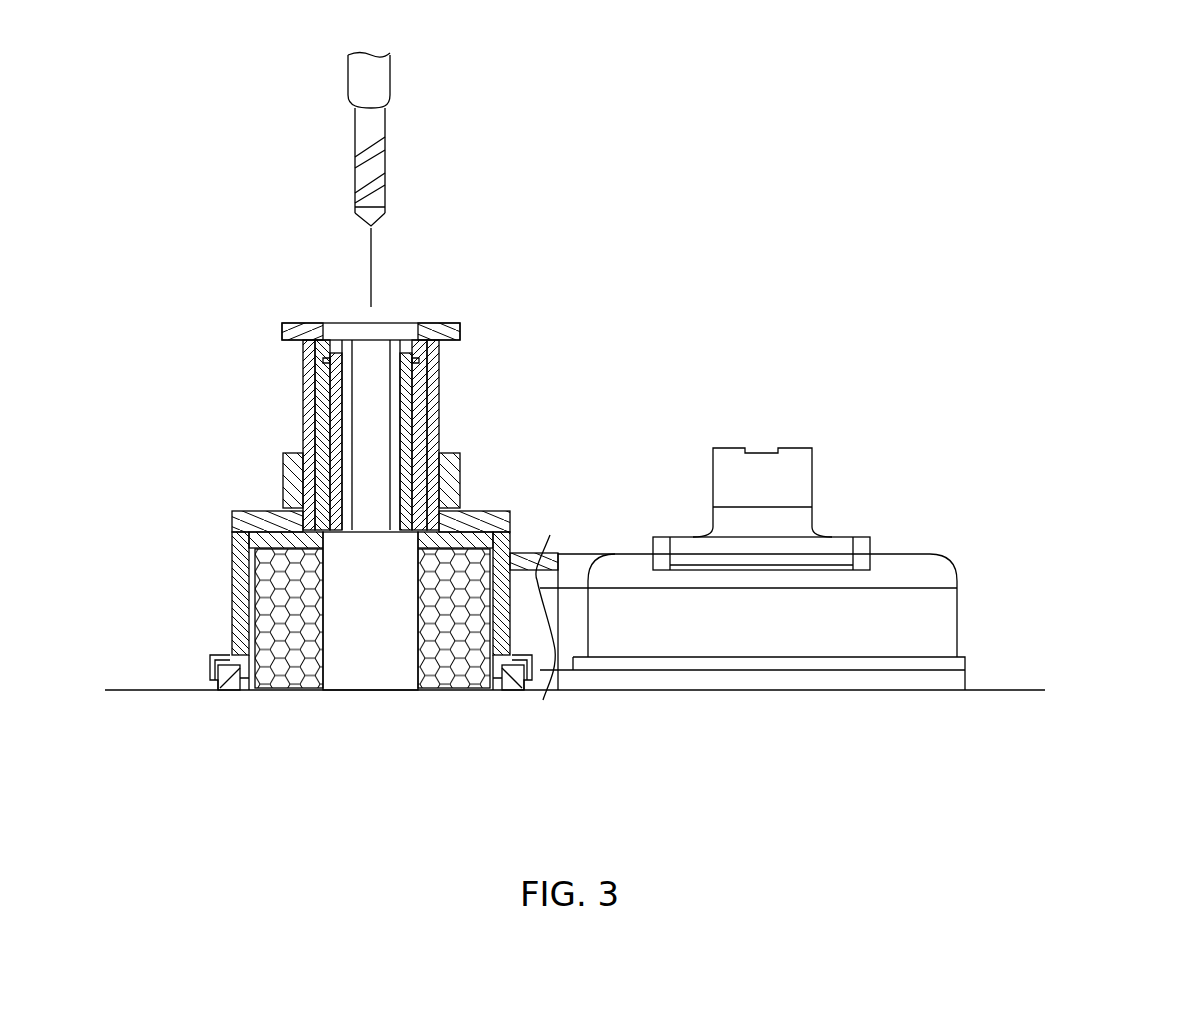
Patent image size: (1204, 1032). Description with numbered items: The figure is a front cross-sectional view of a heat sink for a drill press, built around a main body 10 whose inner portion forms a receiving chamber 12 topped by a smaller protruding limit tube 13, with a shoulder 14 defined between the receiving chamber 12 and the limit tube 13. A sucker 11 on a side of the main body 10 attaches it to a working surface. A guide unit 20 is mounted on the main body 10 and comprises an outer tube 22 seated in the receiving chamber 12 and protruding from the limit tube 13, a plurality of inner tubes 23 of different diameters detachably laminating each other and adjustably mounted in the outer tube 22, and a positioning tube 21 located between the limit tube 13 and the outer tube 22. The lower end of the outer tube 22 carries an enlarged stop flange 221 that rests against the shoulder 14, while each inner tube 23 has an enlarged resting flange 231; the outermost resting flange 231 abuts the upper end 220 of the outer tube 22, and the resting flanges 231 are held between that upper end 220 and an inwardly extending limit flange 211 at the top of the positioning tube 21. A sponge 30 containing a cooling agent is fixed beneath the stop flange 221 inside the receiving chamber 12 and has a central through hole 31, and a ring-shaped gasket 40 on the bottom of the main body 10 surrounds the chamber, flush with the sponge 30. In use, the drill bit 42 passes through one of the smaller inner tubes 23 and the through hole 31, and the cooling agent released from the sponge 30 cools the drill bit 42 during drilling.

The main body 10 is at (856, 552).
The sucker 11 is at (782, 525).
The receiving chamber 12 is at (235, 618).
The limit tube 13 is at (448, 482).
The shoulder 14 is at (510, 512).
The guide unit 20 is at (298, 302).
The positioning tube 21 is at (306, 357).
The limit flange 211 is at (425, 322).
The outer tube 22 is at (300, 477).
The upper end 220 is at (436, 365).
The stop flange 221 is at (240, 542).
The inner tubes 23 is at (330, 390).
The resting flange 231 is at (430, 343).
The sponge 30 is at (268, 682).
The through hole 31 is at (374, 668).
The gasket 40 is at (522, 667).
The drill bit 42 is at (377, 127).